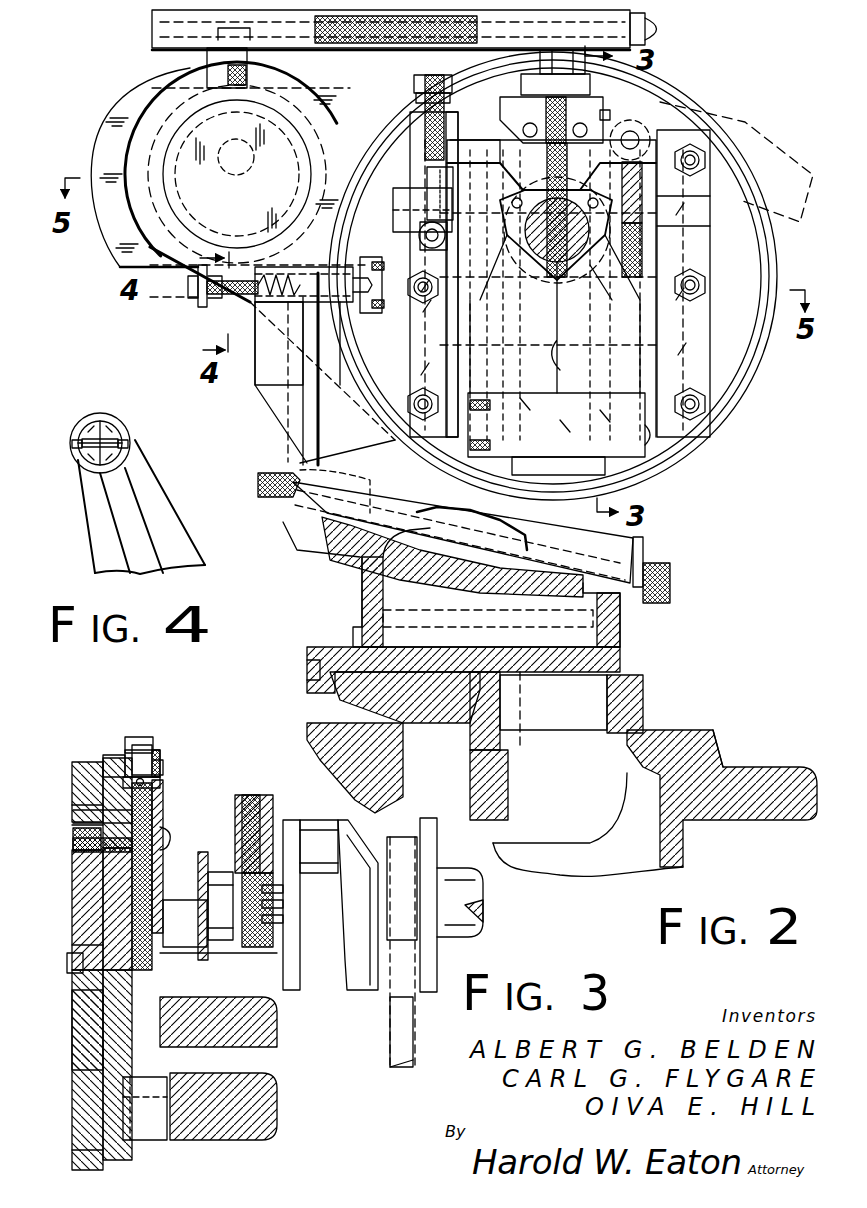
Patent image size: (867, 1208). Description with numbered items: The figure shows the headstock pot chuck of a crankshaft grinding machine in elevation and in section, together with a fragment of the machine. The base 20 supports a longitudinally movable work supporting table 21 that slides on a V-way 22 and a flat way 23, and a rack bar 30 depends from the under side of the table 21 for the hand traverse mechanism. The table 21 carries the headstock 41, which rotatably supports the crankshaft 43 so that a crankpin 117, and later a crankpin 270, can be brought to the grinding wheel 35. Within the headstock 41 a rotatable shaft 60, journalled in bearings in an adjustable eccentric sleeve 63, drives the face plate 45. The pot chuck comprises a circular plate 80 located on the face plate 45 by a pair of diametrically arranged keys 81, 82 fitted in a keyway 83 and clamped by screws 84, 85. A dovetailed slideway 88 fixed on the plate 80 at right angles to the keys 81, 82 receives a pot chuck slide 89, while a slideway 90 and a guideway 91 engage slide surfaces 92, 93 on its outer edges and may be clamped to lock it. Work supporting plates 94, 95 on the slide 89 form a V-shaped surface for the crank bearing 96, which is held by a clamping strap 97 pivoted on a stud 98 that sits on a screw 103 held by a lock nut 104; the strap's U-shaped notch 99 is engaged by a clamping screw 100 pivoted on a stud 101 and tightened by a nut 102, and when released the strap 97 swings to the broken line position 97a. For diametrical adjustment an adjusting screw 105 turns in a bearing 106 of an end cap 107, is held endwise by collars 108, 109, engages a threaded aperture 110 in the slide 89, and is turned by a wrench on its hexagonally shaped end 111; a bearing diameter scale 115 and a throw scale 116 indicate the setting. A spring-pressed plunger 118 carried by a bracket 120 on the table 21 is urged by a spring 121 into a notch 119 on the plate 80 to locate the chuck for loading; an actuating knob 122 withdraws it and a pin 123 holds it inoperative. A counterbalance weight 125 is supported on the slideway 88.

In FIG. 2, the base 20 is at (310, 732).
In FIG. 2, the work supporting table 21 is at (360, 600).
In FIG. 2, the V-way 22 is at (320, 762).
In FIG. 2, the flat way 23 is at (680, 725).
In FIG. 2, the rack bar 30 is at (500, 788).
In FIG. 3, the grinding wheel 35 is at (390, 1043).
In FIG. 2, the headstock 41 is at (200, 72).
In FIG. 2, the crankshaft 43 is at (622, 203).
In FIG. 3, the crankshaft 43 is at (198, 885).
In FIG. 2, the face plate 45 is at (372, 186).
In FIG. 2, the rotatable shaft 60 is at (258, 168).
In FIG. 2, the eccentric sleeve 63 is at (205, 200).
In FIG. 2, the circular plate 80 is at (368, 178).
In FIG. 3, the circular plate 80 is at (86, 766).
In FIG. 2, the key 81 is at (484, 300).
In FIG. 2, the key 82 is at (662, 252).
In FIG. 3, the key 82 is at (68, 966).
In FIG. 2, the keyway 83 is at (704, 331).
In FIG. 3, the keyway 83 is at (74, 946).
In FIG. 2, the screw 84 is at (372, 454).
In FIG. 2, the screw 85 is at (655, 470).
In FIG. 2, the dovetailed slideway 88 is at (606, 112).
In FIG. 3, the dovetailed slideway 88 is at (105, 792).
In FIG. 2, the pot chuck slide 89 is at (498, 140).
In FIG. 3, the pot chuck slide 89 is at (186, 960).
In FIG. 2, the slideway 90 is at (418, 340).
In FIG. 2, the guideway 91 is at (704, 350).
In FIG. 3, the guideway 91 is at (125, 806).
In FIG. 2, the slide surface 92 is at (418, 368).
In FIG. 2, the slide surface 93 is at (616, 318).
In FIG. 3, the slide surface 93 is at (100, 1015).
In FIG. 2, the work supporting plate 94 is at (492, 322).
In FIG. 2, the work supporting plate 95 is at (620, 300).
In FIG. 3, the work supporting plate 95 is at (283, 920).
In FIG. 2, the crank bearing 96 is at (508, 206).
In FIG. 3, the crank bearing 96 is at (226, 880).
In FIG. 2, the clamping strap 97 is at (446, 125).
In FIG. 3, the clamping strap 97 is at (235, 835).
In FIG. 2, the broken line position 97a is at (790, 160).
In FIG. 2, the stud 98 is at (640, 138).
In FIG. 3, the stud 98 is at (235, 802).
In FIG. 2, the U-shaped notch 99 is at (442, 60).
In FIG. 2, the clamping screw 100 is at (414, 82).
In FIG. 2, the stud 101 is at (419, 238).
In FIG. 2, the nut 102 is at (416, 99).
In FIG. 2, the screw 103 is at (680, 200).
In FIG. 3, the screw 103 is at (283, 889).
In FIG. 2, the lock nut 104 is at (680, 226).
In FIG. 3, the lock nut 104 is at (283, 904).
In FIG. 2, the adjusting screw 105 is at (578, 394).
In FIG. 3, the adjusting screw 105 is at (160, 806).
In FIG. 2, the bearing 106 is at (588, 74).
In FIG. 3, the bearing 106 is at (160, 768).
In FIG. 2, the end cap 107 is at (510, 106).
In FIG. 3, the end cap 107 is at (110, 760).
In FIG. 2, the collar 108 is at (530, 136).
In FIG. 3, the collar 108 is at (156, 750).
In FIG. 2, the collar 109 is at (580, 136).
In FIG. 3, the collar 109 is at (157, 786).
In FIG. 3, the threaded aperture 110 is at (100, 870).
In FIG. 2, the hexagonally shaped end 111 is at (548, 58).
In FIG. 3, the hexagonally shaped end 111 is at (142, 738).
In FIG. 2, the bearing diameter scale 115 is at (447, 236).
In FIG. 2, the throw scale 116 is at (437, 205).
In FIG. 3, the crankpin 117 is at (395, 955).
In FIG. 2, the spring-pressed plunger 118 is at (352, 268).
In FIG. 4, the spring-pressed plunger 118 is at (102, 428).
In FIG. 2, the notch 119 is at (376, 314).
In FIG. 2, the bracket 120 is at (352, 283).
In FIG. 4, the bracket 120 is at (88, 428).
In FIG. 2, the spring 121 is at (256, 380).
In FIG. 2, the actuating knob 122 is at (198, 284).
In FIG. 2, the pin 123 is at (215, 290).
In FIG. 4, the pin 123 is at (76, 450).
In FIG. 2, the counterbalance weight 125 is at (650, 480).
In FIG. 3, the counterbalance weight 125 is at (262, 1103).
In FIG. 3, the crankpin 270 is at (320, 838).